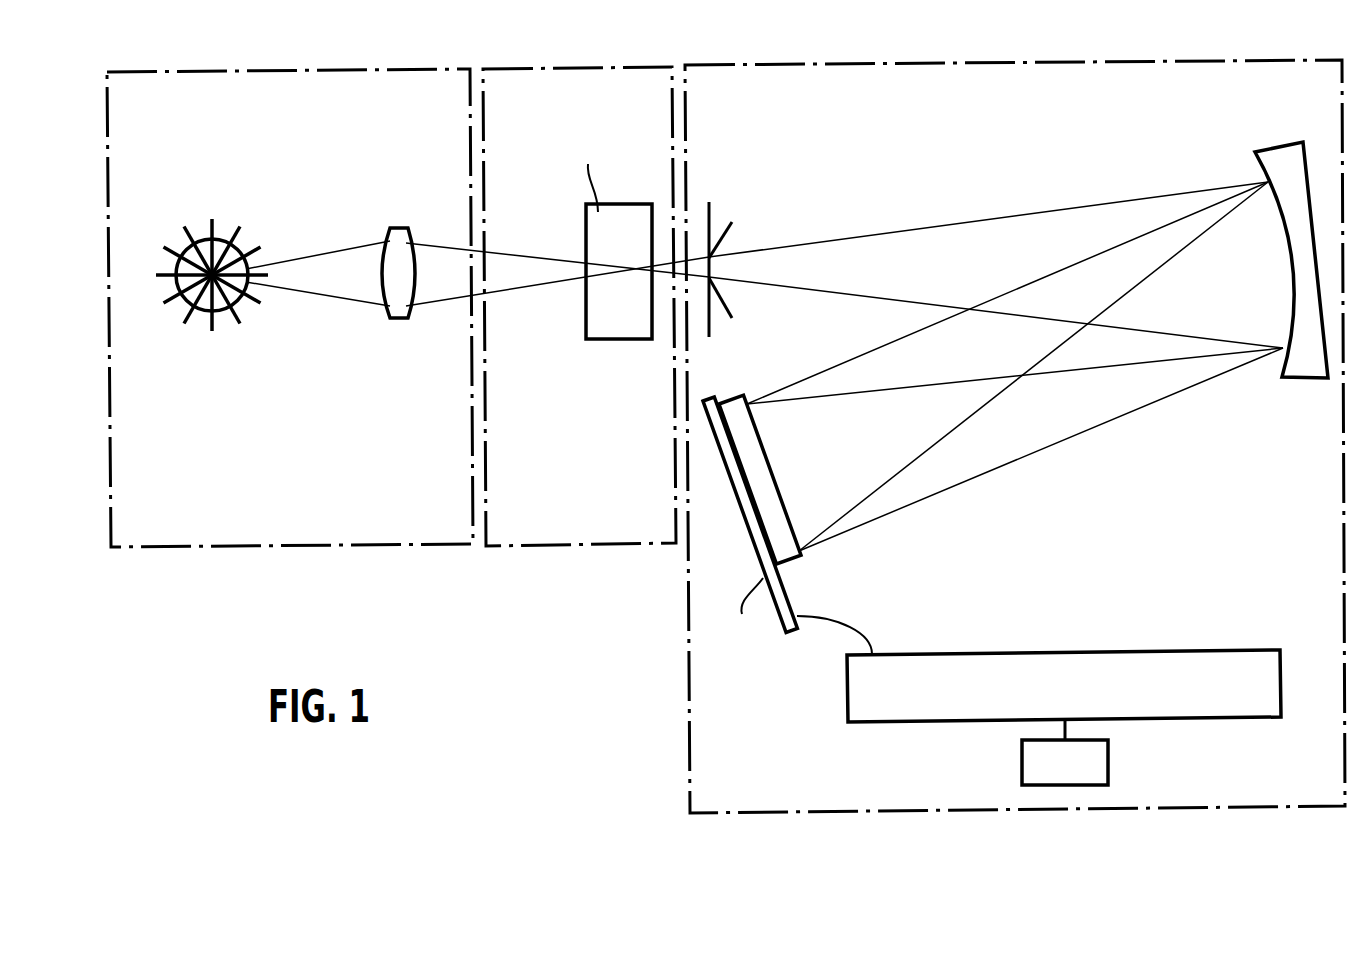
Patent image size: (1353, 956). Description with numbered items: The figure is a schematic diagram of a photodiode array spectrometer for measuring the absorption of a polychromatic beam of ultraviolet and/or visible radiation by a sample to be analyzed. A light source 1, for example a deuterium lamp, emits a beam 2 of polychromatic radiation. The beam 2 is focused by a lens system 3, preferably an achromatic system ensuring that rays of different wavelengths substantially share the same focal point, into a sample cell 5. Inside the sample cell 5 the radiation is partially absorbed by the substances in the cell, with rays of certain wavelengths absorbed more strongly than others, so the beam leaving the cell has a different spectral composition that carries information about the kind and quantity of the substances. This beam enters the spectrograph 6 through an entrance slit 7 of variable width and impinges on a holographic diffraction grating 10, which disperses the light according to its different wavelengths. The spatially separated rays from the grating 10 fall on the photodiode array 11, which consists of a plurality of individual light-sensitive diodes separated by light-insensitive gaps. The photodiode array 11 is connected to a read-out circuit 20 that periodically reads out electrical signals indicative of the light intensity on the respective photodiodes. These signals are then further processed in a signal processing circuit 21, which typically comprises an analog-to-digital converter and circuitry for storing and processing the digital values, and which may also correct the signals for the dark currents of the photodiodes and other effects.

The light source 1 is at (168, 273).
The beam 2 is at (316, 266).
The lens system 3 is at (400, 232).
The sample cell 5 is at (590, 326).
The spectrograph 6 is at (706, 778).
The entrance slit 7 is at (714, 268).
The holographic diffraction grating 10 is at (1290, 265).
The photodiode array 11 is at (752, 533).
The read-out circuit 20 is at (1157, 667).
The signal processing circuit 21 is at (1102, 766).